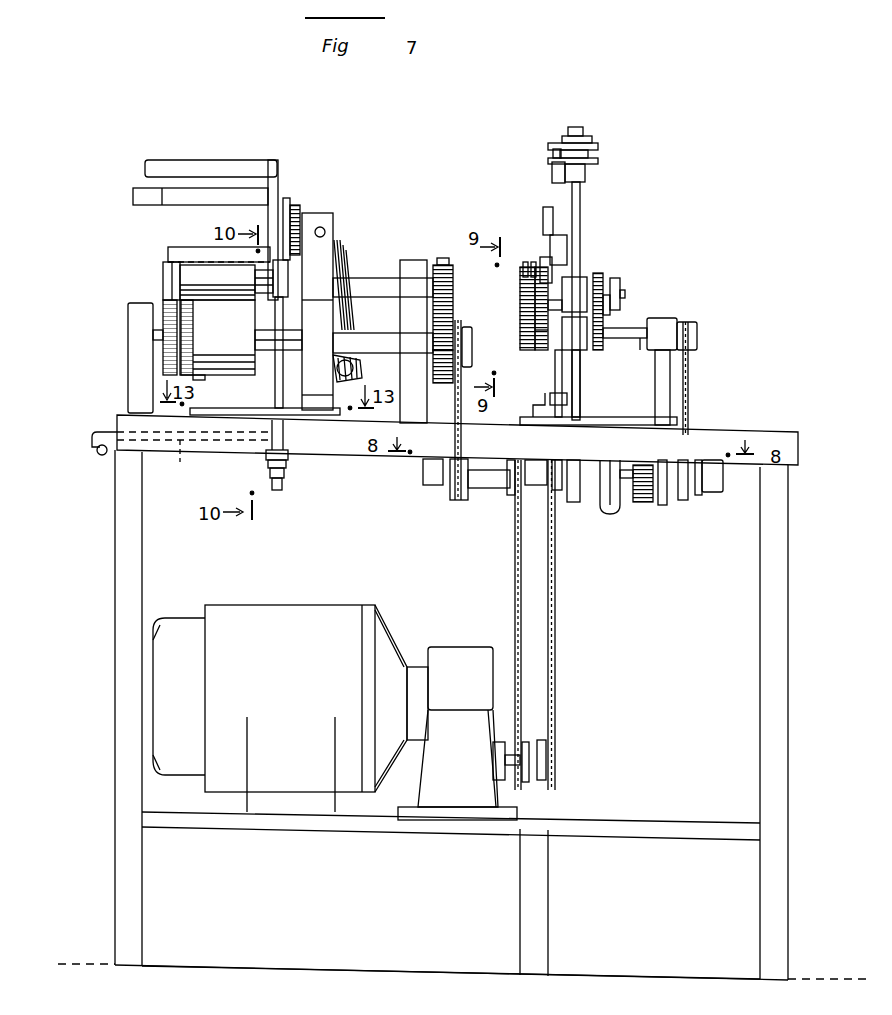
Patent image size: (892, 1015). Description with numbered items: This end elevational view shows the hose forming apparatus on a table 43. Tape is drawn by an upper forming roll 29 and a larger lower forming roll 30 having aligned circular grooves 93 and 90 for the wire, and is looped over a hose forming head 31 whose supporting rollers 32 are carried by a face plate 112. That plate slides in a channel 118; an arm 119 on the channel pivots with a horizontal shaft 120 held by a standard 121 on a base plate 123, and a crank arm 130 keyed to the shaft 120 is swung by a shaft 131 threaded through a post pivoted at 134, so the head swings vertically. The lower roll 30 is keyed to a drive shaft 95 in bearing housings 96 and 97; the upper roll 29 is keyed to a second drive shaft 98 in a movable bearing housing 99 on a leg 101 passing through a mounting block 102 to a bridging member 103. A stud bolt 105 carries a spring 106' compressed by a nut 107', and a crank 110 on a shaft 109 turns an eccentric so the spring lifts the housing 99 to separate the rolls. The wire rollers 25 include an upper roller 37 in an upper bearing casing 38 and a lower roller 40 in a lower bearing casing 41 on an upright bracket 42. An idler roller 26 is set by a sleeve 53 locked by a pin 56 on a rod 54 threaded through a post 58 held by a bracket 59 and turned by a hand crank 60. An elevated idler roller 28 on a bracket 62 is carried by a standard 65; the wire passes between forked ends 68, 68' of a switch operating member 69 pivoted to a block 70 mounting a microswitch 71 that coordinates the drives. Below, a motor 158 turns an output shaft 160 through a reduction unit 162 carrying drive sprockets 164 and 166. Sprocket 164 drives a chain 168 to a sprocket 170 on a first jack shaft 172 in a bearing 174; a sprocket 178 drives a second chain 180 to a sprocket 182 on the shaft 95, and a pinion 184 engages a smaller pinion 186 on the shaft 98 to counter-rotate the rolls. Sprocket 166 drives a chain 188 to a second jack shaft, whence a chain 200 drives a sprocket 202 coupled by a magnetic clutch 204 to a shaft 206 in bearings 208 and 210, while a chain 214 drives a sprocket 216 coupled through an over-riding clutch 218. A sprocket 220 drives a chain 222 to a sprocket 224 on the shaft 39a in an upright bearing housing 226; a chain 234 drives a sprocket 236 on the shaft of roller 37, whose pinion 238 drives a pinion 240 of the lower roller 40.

The rollers 25 is at (512, 346).
The idler roller 26 is at (521, 282).
The elevated idler roller 28 is at (588, 153).
The upper forming roll 29 is at (165, 280).
The lower forming roll 30 is at (217, 366).
The hose forming head 31 is at (178, 140).
The supporting rollers 32 is at (162, 203).
The upper roller 37 is at (535, 305).
The upper bearing casing 38 is at (587, 280).
The drive shaft 39a is at (625, 346).
The lower roller 40 is at (540, 328).
The lower bearing casing 41 is at (582, 356).
The upright bracket 42 is at (577, 405).
The table 43 is at (768, 432).
The sleeve 53 is at (552, 258).
The rod 54 is at (555, 367).
The pin 56 is at (540, 262).
The post 58 is at (550, 402).
The bracket 59 is at (545, 418).
The hand crank 60 is at (548, 209).
The bracket 62 is at (573, 126).
The standard 65 is at (581, 196).
The forked end 68 is at (595, 135).
The forked end 68' is at (594, 170).
The switch operating member 69 is at (560, 150).
The block 70 is at (588, 136).
The microswitch 71 is at (552, 166).
The circular groove 90 is at (181, 333).
The circular groove 93 is at (181, 285).
The drive shaft 95 is at (372, 348).
The bearing housing 96 is at (136, 322).
The bearing housing 97 is at (410, 262).
The second drive shaft 98 is at (371, 287).
The movable bearing housing 99 is at (289, 275).
The leg 101 is at (275, 380).
The mounting block 102 is at (285, 440).
The bridging member 103 is at (286, 461).
The stud bolt 105 is at (280, 491).
The spring 106' is at (250, 463).
The nut 107' is at (301, 485).
The shaft 109 is at (192, 459).
The crank 110 is at (92, 445).
The face plate 112 is at (277, 160).
The channel 118 is at (287, 205).
The arm 119 is at (300, 212).
The horizontal shaft 120 is at (322, 227).
The standard 121 is at (335, 240).
The base plate 123 is at (320, 417).
The crank arm 130 is at (345, 315).
The shaft 131 is at (333, 388).
The pivot 134 is at (340, 361).
The motor 158 is at (258, 620).
The output shaft 160 is at (497, 765).
The reduction unit 162 is at (447, 660).
The drive sprocket 164 is at (526, 741).
The drive sprocket 166 is at (543, 782).
The chain 168 is at (514, 596).
The sprocket 170 is at (510, 493).
The first jack shaft 172 is at (486, 478).
The bearing 174 is at (430, 470).
The sprocket 178 is at (460, 492).
The second chain 180 is at (455, 424).
The sprocket 182 is at (466, 326).
The pinion 184 is at (443, 384).
The second smaller pinion 186 is at (443, 265).
The chain 188 is at (557, 648).
The chain 200 is at (567, 494).
The sprocket 202 is at (580, 503).
The magnetic clutch 204 is at (610, 516).
The shaft 206 is at (706, 470).
The bearing 208 is at (556, 468).
The bearing 210 is at (712, 490).
The chain 214 is at (661, 506).
The sprocket 216 is at (681, 501).
The over-riding clutch 218 is at (643, 503).
The sprocket 220 is at (699, 496).
The chain 222 is at (689, 385).
The sprocket 224 is at (698, 333).
The upright bearing housing 226 is at (656, 356).
The chain 234 is at (606, 282).
The sprocket 236 is at (621, 291).
The pinion 238 is at (600, 272).
The pinion 240 is at (641, 346).